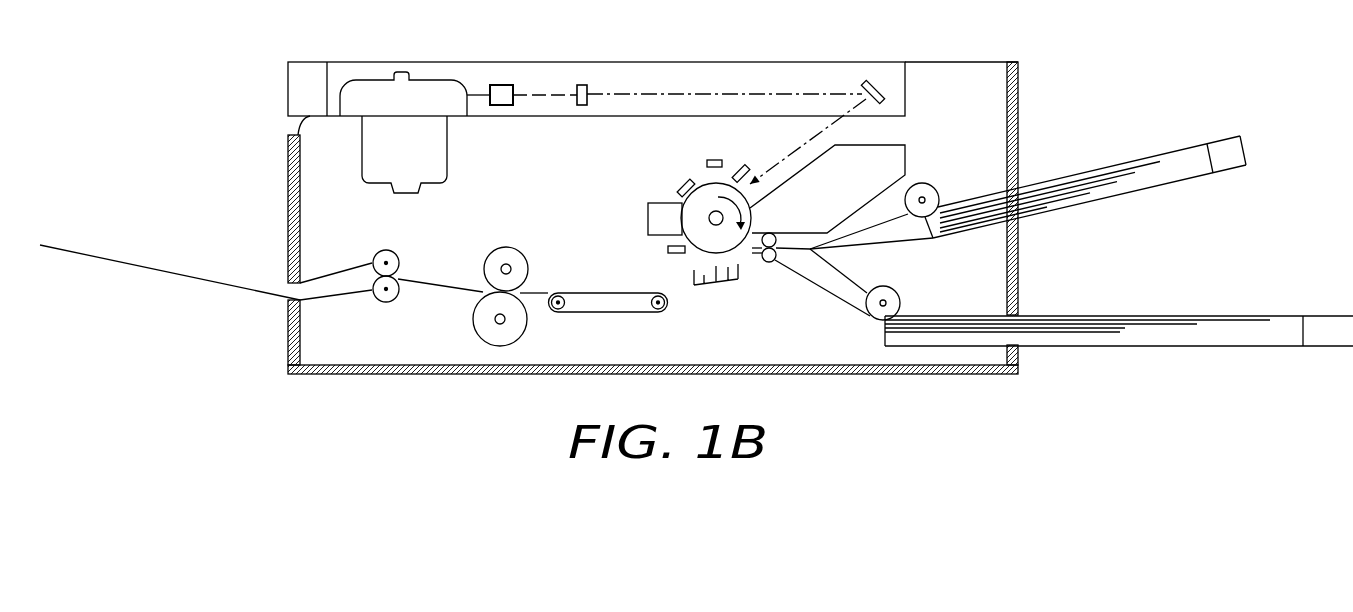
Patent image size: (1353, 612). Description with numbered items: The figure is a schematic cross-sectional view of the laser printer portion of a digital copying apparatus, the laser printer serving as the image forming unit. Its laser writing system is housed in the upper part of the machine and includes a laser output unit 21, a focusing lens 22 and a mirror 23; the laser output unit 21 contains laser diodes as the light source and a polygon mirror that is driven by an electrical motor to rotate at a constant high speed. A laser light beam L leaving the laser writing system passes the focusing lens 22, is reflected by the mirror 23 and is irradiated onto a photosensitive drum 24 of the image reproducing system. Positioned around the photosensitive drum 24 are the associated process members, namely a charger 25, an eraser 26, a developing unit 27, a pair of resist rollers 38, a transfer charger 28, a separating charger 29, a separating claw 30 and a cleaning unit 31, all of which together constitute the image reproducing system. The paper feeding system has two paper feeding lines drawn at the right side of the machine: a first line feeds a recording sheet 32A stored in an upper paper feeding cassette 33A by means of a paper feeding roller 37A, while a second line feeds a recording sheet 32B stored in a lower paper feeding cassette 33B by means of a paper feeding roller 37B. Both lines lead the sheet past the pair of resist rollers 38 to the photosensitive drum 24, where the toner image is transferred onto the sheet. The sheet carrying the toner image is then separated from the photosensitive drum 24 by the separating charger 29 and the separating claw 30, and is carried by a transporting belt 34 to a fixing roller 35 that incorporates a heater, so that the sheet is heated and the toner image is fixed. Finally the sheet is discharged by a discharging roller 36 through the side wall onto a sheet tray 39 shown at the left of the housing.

The laser output unit 21 is at (448, 158).
The focusing lens 22 is at (577, 105).
The laser light beam L is at (755, 93).
The mirror 23 is at (884, 86).
The photosensitive drum 24 is at (695, 180).
The charger 25 is at (715, 160).
The eraser 26 is at (747, 163).
The developing unit 27 is at (906, 147).
The transfer charger 28 is at (731, 283).
The separating charger 29 is at (703, 285).
The separating claw 30 is at (668, 249).
The cleaning unit 31 is at (648, 212).
The recording sheet 32A is at (1092, 178).
The recording sheet 32B is at (1127, 318).
The upper paper feeding cassette 33A is at (1243, 148).
The lower paper feeding cassette 33B is at (1278, 320).
The transporting belt 34 is at (609, 312).
The fixing roller 35 is at (502, 247).
The discharging roller 36 is at (376, 252).
The paper feeding roller 37A is at (938, 194).
The paper feeding roller 37B is at (900, 302).
The pair of resist rollers 38 is at (773, 262).
The sheet tray 39 is at (242, 290).